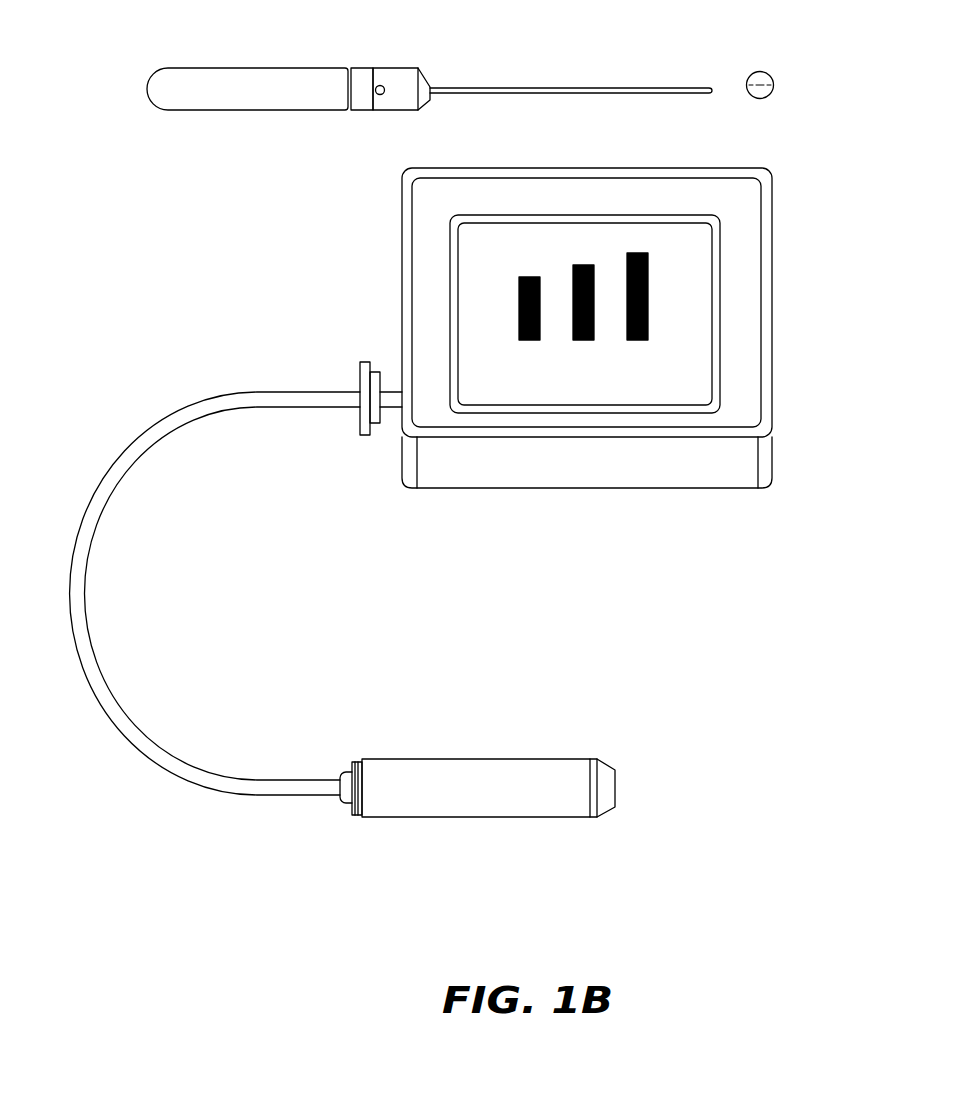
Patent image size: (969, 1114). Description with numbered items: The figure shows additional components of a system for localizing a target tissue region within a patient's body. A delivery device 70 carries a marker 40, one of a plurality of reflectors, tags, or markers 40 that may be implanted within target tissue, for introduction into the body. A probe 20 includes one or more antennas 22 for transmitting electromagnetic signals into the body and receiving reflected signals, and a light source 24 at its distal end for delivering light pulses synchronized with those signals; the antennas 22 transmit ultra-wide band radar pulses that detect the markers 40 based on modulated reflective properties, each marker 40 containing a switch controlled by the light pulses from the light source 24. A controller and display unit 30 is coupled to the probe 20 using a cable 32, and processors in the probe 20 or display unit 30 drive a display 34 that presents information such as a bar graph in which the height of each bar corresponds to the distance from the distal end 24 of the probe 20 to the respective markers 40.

The delivery device 70 is at (510, 78).
The marker 40 is at (783, 83).
The display unit 30 is at (397, 288).
The cable 32 is at (130, 735).
The display 34 is at (646, 331).
The probe 20 is at (477, 790).
The antenna 22 is at (365, 758).
The light source 24 is at (580, 758).